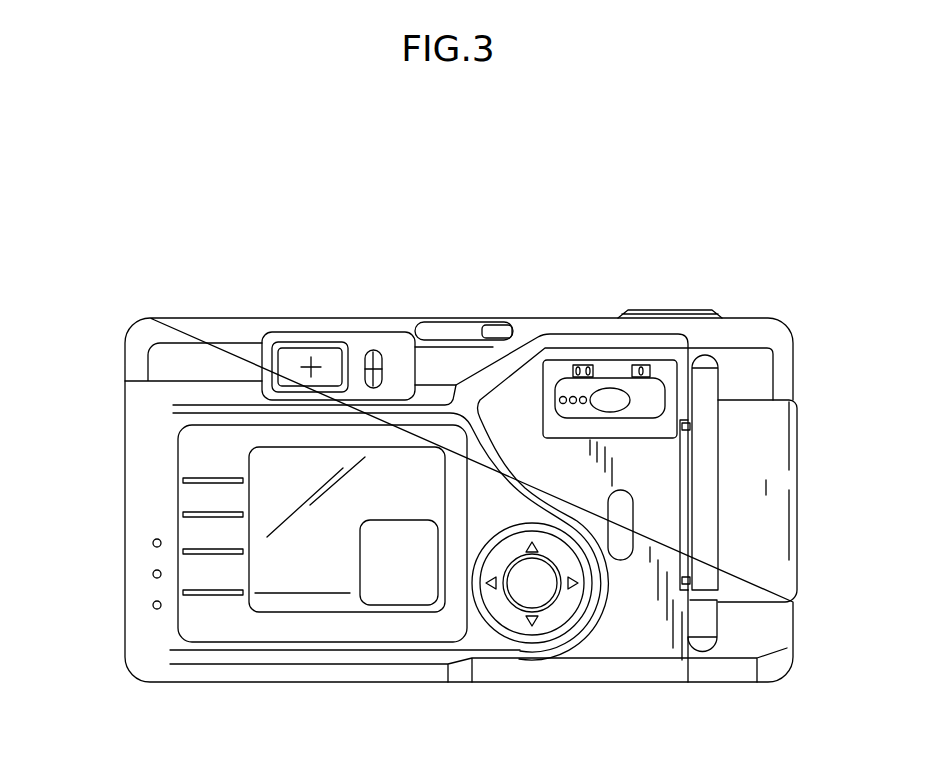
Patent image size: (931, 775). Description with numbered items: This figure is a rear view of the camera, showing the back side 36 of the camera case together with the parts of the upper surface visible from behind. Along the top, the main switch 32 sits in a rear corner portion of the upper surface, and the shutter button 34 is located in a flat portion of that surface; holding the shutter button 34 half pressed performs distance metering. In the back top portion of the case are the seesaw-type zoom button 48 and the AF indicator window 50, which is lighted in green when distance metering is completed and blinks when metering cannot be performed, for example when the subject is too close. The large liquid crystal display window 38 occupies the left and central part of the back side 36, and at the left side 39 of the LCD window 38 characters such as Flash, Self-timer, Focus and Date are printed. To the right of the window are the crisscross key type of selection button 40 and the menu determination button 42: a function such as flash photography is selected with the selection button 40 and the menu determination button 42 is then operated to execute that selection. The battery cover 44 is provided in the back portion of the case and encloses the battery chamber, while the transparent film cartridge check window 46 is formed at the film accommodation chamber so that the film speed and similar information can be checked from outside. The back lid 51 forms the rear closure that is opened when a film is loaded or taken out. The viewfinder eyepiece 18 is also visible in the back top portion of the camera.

The viewfinder eyepiece 18 is at (301, 362).
The main switch 32 is at (493, 331).
The shutter button 34 is at (667, 311).
The back side 36 is at (152, 628).
The liquid crystal display window 38 is at (318, 557).
The left side of the LCD window 39 is at (208, 624).
The crisscross key type of selection button 40 is at (557, 615).
The menu determination button 42 is at (520, 618).
The battery cover 44 is at (757, 487).
The film cartridge check window 46 is at (624, 537).
The seesaw-type zoom button 48 is at (654, 398).
The AF indicator window 50 is at (373, 364).
The back lid 51 is at (157, 510).